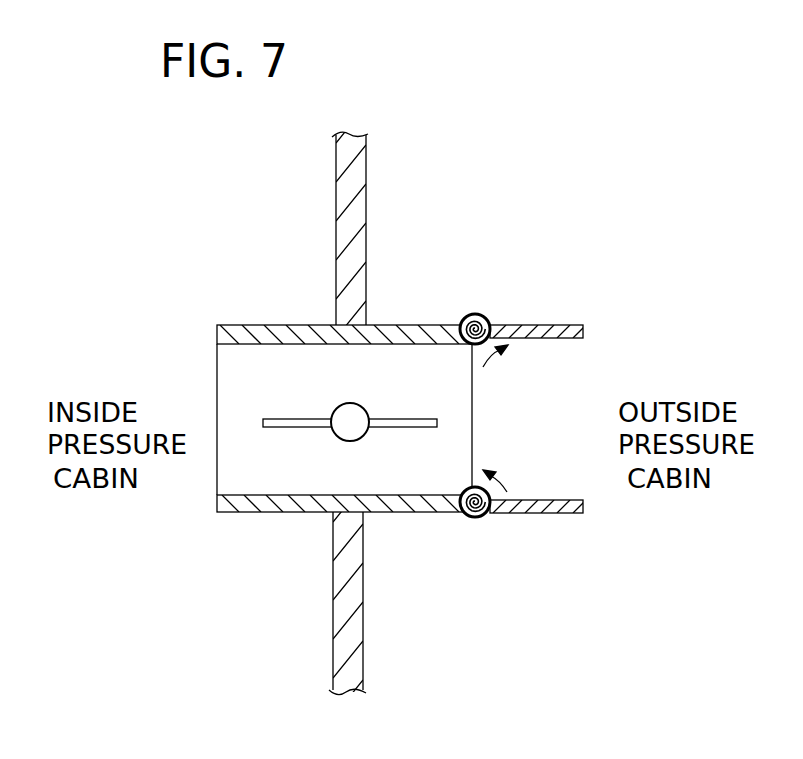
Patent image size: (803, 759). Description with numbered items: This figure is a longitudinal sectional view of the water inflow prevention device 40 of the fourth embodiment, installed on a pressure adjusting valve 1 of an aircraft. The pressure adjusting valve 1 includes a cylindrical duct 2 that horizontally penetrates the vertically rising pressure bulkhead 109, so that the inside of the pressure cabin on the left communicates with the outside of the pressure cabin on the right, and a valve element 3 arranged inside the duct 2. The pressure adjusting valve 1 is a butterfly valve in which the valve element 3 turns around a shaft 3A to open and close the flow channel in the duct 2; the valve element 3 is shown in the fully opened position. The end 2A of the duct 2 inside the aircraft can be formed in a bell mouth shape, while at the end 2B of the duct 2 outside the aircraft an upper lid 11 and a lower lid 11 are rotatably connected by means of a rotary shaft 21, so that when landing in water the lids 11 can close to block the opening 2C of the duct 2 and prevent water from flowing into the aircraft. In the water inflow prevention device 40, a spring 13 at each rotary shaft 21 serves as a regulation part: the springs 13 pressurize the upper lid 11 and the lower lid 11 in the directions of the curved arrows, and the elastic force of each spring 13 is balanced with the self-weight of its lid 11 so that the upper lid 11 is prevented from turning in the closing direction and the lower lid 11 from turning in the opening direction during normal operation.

The pressure adjusting valve 1 is at (271, 300).
The duct 2 is at (387, 324).
The end of the duct inside the aircraft 2A is at (228, 324).
The end of the duct outside the aircraft 2B is at (453, 324).
The opening of the duct 2C is at (478, 443).
The valve element 3 is at (277, 419).
The shaft 3A is at (369, 411).
The lid 11 is at (573, 325).
The spring 13 is at (460, 559).
The rotary shaft 21 is at (490, 312).
The water inflow prevention device 40 is at (552, 291).
The pressure bulkhead 109 is at (368, 253).